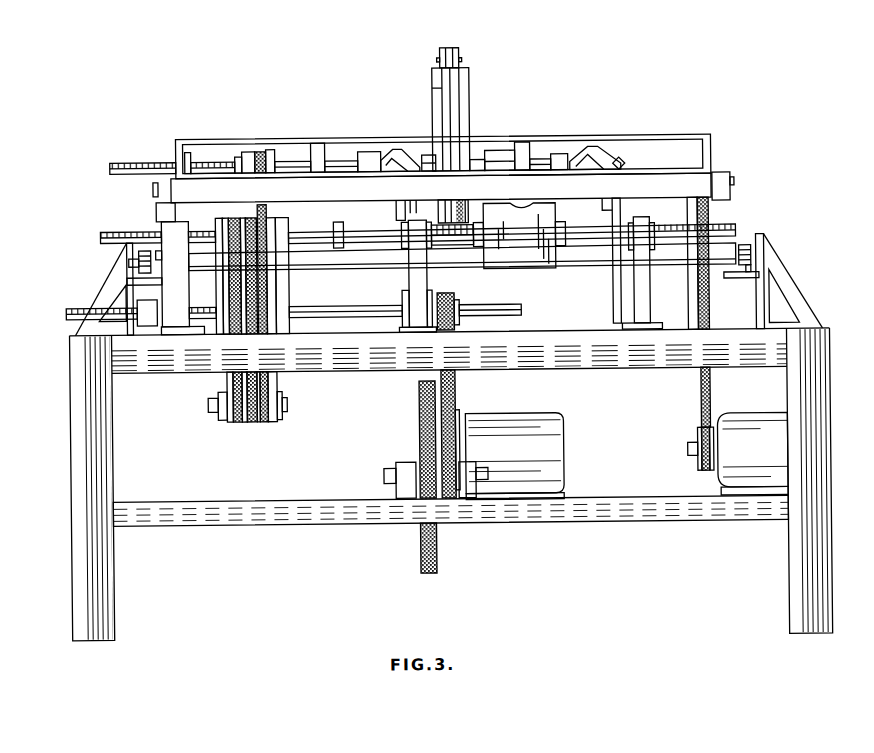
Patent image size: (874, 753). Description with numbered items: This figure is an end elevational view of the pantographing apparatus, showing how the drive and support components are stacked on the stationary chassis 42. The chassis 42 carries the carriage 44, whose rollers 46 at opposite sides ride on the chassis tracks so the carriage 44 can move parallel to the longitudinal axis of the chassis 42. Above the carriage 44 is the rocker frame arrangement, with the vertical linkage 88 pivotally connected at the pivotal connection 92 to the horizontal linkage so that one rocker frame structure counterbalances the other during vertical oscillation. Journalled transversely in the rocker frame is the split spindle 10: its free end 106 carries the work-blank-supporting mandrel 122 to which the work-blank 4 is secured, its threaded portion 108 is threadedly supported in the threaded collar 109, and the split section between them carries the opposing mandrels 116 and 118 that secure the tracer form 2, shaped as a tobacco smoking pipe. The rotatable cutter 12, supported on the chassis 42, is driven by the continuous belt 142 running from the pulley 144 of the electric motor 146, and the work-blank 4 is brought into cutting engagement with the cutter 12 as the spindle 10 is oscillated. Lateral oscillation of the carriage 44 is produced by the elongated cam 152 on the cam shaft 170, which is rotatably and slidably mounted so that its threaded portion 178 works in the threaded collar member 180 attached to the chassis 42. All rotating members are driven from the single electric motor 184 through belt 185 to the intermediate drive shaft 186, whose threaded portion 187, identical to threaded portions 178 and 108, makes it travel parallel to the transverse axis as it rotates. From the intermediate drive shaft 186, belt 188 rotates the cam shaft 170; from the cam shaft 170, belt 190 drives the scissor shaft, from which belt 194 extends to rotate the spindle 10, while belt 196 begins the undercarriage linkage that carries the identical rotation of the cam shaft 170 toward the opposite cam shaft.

The tracer form 2 is at (412, 149).
The work-blank 4 is at (615, 149).
The spindle 10 is at (215, 160).
The rotatable cutter 12 is at (628, 163).
The stationary chassis 42 is at (816, 359).
The carriage 44 is at (713, 252).
The rollers 46 is at (140, 259).
The vertical linkage 88 is at (457, 110).
The pivotal connection 92 is at (464, 61).
The free end 106 is at (552, 155).
The threaded portion 108 is at (139, 160).
The threaded collar 109 is at (191, 150).
The mandrel 116 is at (422, 171).
The mandrel 118 is at (375, 150).
The work-blank-supporting mandrel 122 is at (578, 155).
The belt 142 is at (711, 385).
The pulley 144 is at (697, 440).
The electric motor 146 is at (737, 420).
The cam 152 is at (541, 258).
The cam shaft 170 is at (382, 217).
The threaded portion 178 is at (144, 229).
The threaded collar member 180 is at (207, 214).
The electric motor 184 is at (543, 451).
The belt 185 is at (454, 390).
The intermediate drive shaft 186 is at (485, 306).
The threaded portion 187 is at (77, 296).
The belt 188 is at (250, 216).
The belt 190 is at (233, 216).
The belt 194 is at (262, 150).
The belt 196 is at (269, 212).